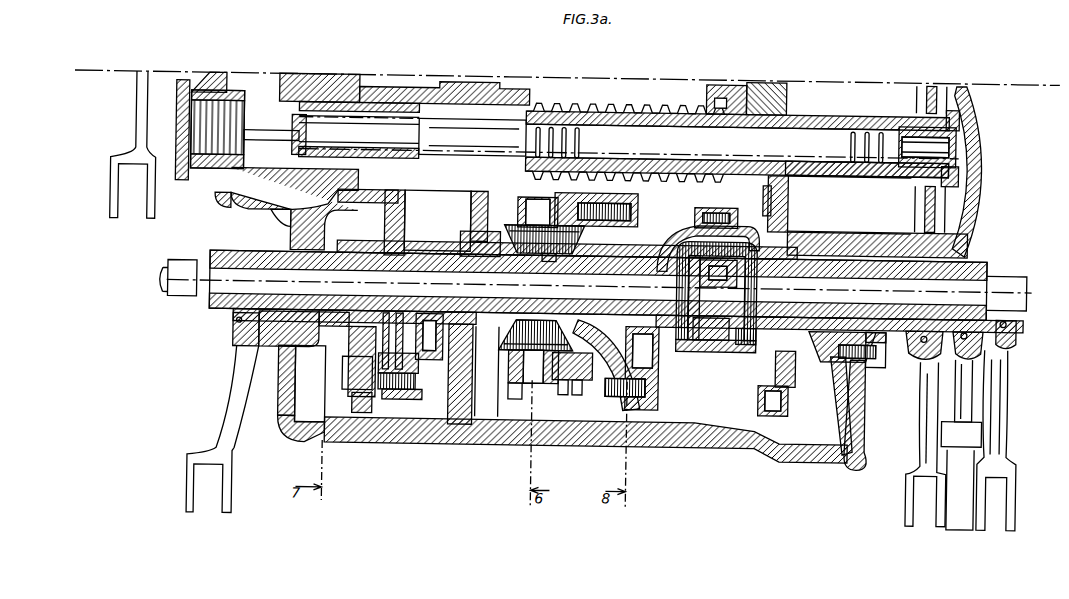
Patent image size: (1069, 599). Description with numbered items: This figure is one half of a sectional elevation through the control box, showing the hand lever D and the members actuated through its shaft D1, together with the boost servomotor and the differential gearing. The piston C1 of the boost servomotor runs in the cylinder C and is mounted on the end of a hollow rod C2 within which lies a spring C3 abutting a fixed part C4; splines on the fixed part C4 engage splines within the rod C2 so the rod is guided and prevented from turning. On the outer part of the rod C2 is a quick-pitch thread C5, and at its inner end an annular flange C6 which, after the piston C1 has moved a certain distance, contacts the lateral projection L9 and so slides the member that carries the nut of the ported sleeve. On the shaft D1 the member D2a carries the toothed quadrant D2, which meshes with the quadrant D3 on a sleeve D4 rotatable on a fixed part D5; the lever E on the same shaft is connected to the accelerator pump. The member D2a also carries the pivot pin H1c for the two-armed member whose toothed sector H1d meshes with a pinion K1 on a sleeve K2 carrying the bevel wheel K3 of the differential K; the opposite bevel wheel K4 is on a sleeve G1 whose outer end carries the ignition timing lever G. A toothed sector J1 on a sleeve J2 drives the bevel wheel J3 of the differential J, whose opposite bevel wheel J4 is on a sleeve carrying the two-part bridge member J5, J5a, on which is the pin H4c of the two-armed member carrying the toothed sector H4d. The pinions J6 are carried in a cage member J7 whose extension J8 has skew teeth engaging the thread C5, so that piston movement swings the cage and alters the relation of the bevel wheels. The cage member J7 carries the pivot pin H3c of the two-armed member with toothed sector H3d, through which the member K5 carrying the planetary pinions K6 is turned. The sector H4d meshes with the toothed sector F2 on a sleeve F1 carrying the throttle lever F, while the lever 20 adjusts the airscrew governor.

The lever 20 is at (122, 150).
The hand lever D is at (232, 378).
The shaft D1 is at (230, 271).
The toothed quadrant D2 is at (395, 218).
The member D2a is at (393, 328).
The toothed quadrant D3 is at (353, 199).
The sleeve D4 is at (233, 193).
The fixed part D5 is at (386, 80).
The cylinder C is at (897, 207).
The piston C1 is at (937, 183).
The hollow rod C2 is at (827, 154).
The spring C3 is at (927, 130).
The fixed part C4 is at (487, 114).
The quick-pitch thread C5 is at (578, 98).
The annular flange C6 is at (705, 84).
The lateral projection L9 is at (787, 80).
The toothed sector J1 is at (450, 345).
The sleeve J2 is at (463, 246).
The bevel wheel J3 is at (525, 338).
The bevel wheel J4 is at (580, 372).
The two-part member J5 is at (698, 200).
The part of member J5 J5a is at (752, 370).
The pinions J6 is at (527, 373).
The cage member J7 is at (572, 372).
The extension J8 is at (538, 210).
The pinion K1 is at (420, 398).
The sleeve K2 is at (650, 250).
The bevel wheel K3 is at (697, 332).
The bevel wheel K4 is at (735, 290).
The member K5 is at (740, 336).
The planetary pinions K6 is at (733, 240).
The pivot pin H1c is at (403, 398).
The toothed sector H1d is at (383, 398).
The pivot pin H3c is at (575, 314).
The toothed sector H3d is at (685, 392).
The pin H4c is at (782, 380).
The toothed sector H4d is at (852, 430).
The throttle lever F is at (932, 447).
The sleeve F1 is at (830, 334).
The toothed sector F2 is at (818, 337).
The lever G is at (972, 376).
The sleeve G1 is at (888, 335).
The lever E is at (1007, 413).